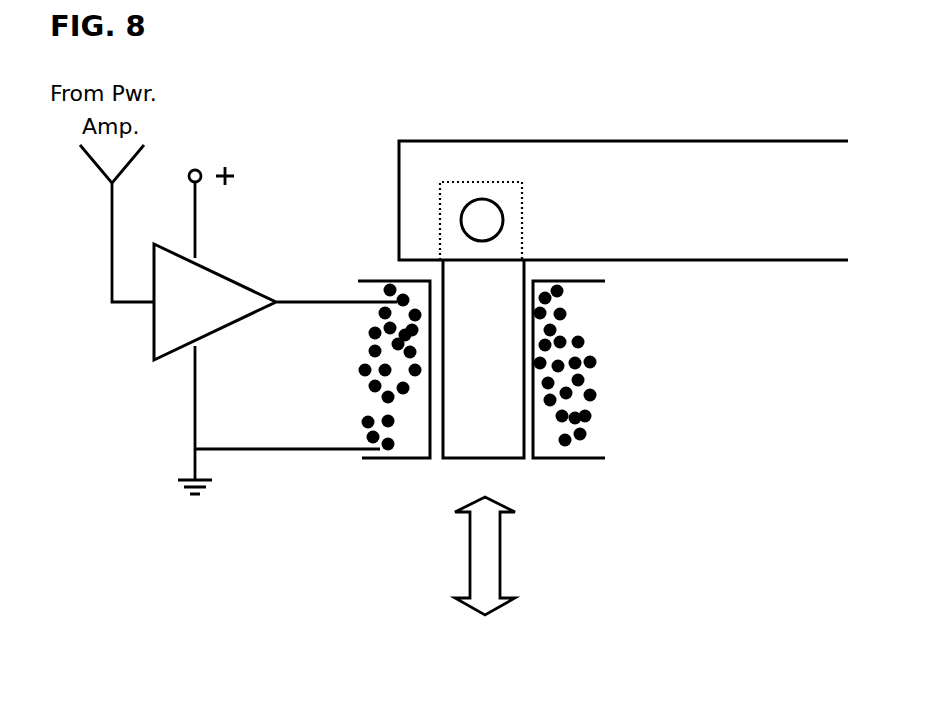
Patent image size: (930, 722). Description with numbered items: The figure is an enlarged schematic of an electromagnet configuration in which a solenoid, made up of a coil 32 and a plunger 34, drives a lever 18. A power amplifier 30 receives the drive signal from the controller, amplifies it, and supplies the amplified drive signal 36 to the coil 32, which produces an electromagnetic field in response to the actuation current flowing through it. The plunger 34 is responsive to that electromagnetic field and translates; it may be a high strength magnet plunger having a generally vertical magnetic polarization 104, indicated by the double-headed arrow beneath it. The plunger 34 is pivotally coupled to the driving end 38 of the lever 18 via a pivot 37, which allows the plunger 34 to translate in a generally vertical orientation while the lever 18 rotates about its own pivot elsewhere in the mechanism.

The lever 18 is at (749, 222).
The power amplifier 30 is at (227, 272).
The coil 32 is at (372, 330).
The plunger 34 is at (505, 458).
The amplified drive signal 36 is at (110, 263).
The pivot 37 is at (503, 220).
The driving end 38 is at (460, 141).
The magnetic polarization 104 is at (467, 575).